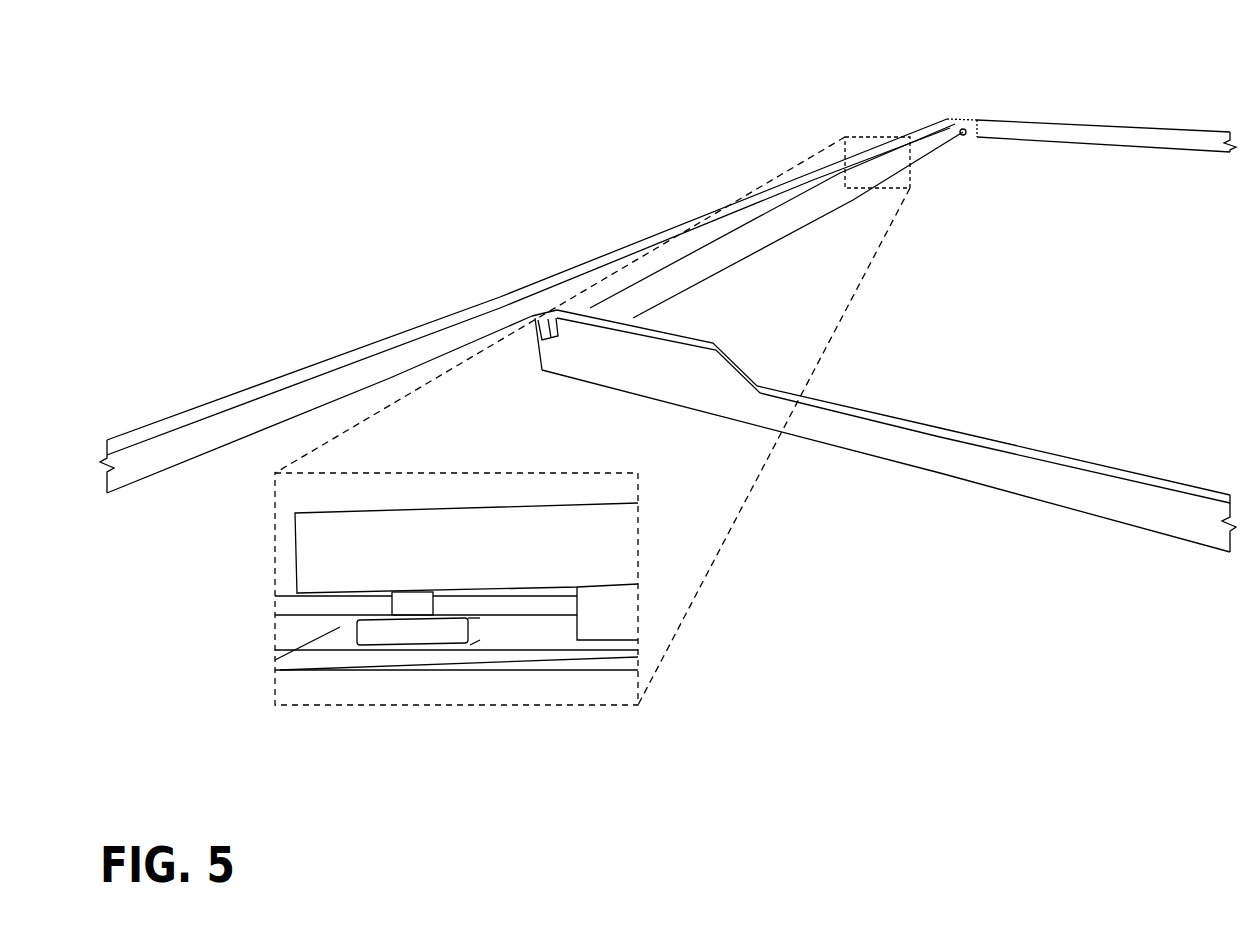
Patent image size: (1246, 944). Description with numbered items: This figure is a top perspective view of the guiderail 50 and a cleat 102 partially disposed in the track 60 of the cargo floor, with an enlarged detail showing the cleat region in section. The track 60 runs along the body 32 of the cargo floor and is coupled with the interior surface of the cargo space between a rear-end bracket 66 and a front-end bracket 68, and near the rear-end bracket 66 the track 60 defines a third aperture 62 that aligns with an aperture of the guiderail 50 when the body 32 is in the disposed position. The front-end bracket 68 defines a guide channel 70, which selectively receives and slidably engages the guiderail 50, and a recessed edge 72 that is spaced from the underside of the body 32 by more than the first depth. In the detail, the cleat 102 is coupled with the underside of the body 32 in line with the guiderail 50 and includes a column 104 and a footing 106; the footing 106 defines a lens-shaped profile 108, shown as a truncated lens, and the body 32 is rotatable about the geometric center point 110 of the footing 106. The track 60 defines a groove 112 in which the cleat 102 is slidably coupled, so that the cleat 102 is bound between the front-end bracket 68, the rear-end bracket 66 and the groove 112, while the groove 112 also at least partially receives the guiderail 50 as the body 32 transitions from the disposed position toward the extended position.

The body 32 is at (317, 553).
The guiderail 50 is at (278, 383).
The track 60 is at (923, 127).
The third aperture 62 is at (966, 135).
The rear-end bracket 66 is at (1125, 128).
The front-end bracket 68 is at (1045, 483).
The guide channel 70 is at (553, 340).
The recessed edge 72 is at (960, 435).
The cleat 102 is at (338, 628).
The column 104 is at (412, 600).
The footing 106 is at (470, 621).
The lens-shaped profile 108 is at (480, 640).
The geometric center point 110 is at (415, 634).
The groove 112 is at (952, 117).